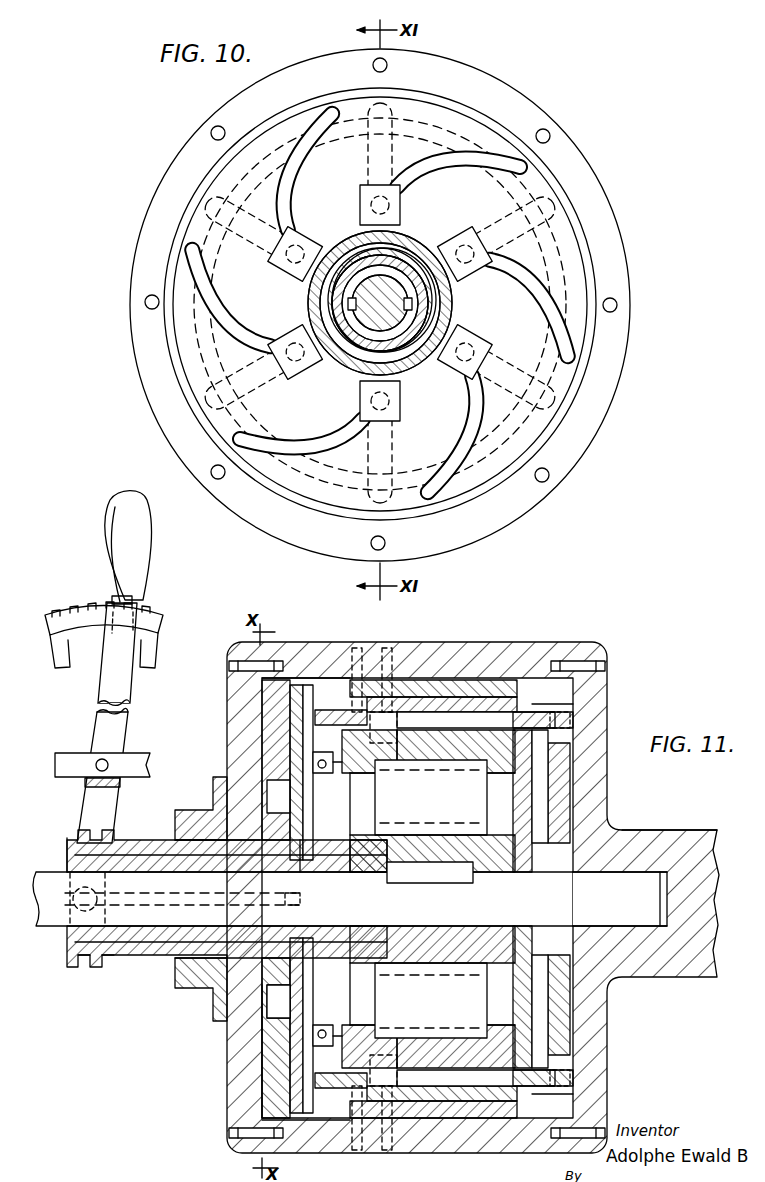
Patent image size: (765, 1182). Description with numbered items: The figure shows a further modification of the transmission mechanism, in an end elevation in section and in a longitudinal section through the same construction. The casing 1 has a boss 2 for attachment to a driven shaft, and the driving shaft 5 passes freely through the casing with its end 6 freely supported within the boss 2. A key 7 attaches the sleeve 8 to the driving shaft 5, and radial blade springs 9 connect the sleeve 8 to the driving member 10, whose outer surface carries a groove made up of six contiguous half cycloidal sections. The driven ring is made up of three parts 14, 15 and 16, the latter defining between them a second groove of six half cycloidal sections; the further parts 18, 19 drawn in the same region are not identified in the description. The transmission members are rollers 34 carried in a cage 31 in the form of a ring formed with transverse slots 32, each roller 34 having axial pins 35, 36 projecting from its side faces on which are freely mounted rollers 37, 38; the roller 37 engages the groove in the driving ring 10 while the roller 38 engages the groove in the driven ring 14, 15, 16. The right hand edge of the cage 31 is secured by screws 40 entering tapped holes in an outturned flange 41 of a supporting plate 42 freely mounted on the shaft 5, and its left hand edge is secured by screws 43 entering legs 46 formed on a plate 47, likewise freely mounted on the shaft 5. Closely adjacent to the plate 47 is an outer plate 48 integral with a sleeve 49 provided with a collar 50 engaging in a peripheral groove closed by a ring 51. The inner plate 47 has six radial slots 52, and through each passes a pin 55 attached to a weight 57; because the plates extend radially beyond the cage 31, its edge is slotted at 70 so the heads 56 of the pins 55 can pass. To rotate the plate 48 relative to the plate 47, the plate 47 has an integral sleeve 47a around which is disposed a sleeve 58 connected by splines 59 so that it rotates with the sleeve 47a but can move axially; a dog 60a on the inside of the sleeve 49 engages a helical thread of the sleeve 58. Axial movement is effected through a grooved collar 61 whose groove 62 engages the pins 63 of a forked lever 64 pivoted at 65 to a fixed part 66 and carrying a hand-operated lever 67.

In FIG. 11, the casing 1 is at (505, 738).
In FIG. 11, the boss 2 is at (668, 850).
In FIG. 10, the driving shaft 5 is at (404, 297).
In FIG. 11, the driving shaft 5 is at (60, 922).
In FIG. 11, the end of the driving shaft 6 is at (605, 900).
In FIG. 11, the key 7 is at (470, 876).
In FIG. 11, the sleeve 8 is at (500, 840).
In FIG. 11, the blade springs 9 is at (480, 807).
In FIG. 11, the driving member 10 is at (575, 652).
In FIG. 11, the driven ring part 14 is at (432, 688).
In FIG. 11, the driven ring part 15 is at (487, 718).
In FIG. 11, the driven ring part 16 is at (327, 712).
In FIG. 11, the bolt 18 is at (388, 652).
In FIG. 11, the bolt 19 is at (360, 650).
In FIG. 11, the cage 31 is at (570, 712).
In FIG. 11, the transverse slots 32 is at (535, 716).
In FIG. 11, the rollers 34 is at (420, 745).
In FIG. 11, the axial pin 35 is at (398, 748).
In FIG. 11, the axial pin 36 is at (450, 768).
In FIG. 11, the roller 37 is at (372, 748).
In FIG. 11, the roller 38 is at (405, 702).
In FIG. 11, the screws 40 is at (572, 720).
In FIG. 11, the outturned flange 41 is at (566, 745).
In FIG. 11, the supporting plate 42 is at (525, 762).
In FIG. 11, the screws 43 is at (326, 775).
In FIG. 11, the legs 46 is at (265, 1060).
In FIG. 11, the plate 47 is at (292, 700).
In FIG. 10, the sleeve 47a is at (400, 270).
In FIG. 11, the sleeve 47a is at (245, 862).
In FIG. 11, the outer plate 48 is at (306, 708).
In FIG. 10, the sleeve 49 is at (352, 365).
In FIG. 11, the sleeve 49 is at (185, 842).
In FIG. 11, the collar 50 is at (272, 795).
In FIG. 11, the ring 51 is at (200, 815).
In FIG. 11, the radial slots 52 is at (282, 735).
In FIG. 11, the pin 55 is at (302, 864).
In FIG. 10, the heads of pins 56 is at (352, 252).
In FIG. 11, the heads of pins 56 is at (325, 862).
In FIG. 11, the weight 57 is at (268, 1015).
In FIG. 11, the sleeve 58 is at (140, 852).
In FIG. 10, the splines 59 is at (348, 303).
In FIG. 11, the splines 59 is at (302, 900).
In FIG. 11, the dog 60a is at (200, 870).
In FIG. 11, the grooved collar 61 is at (101, 968).
In FIG. 11, the groove 62 is at (86, 968).
In FIG. 11, the pins 63 is at (73, 899).
In FIG. 11, the forked lever 64 is at (92, 800).
In FIG. 11, the pivot 65 is at (97, 770).
In FIG. 11, the fixed part 66 is at (62, 768).
In FIG. 11, the hand-operated lever 67 is at (120, 740).
In FIG. 11, the slots 70 is at (283, 682).